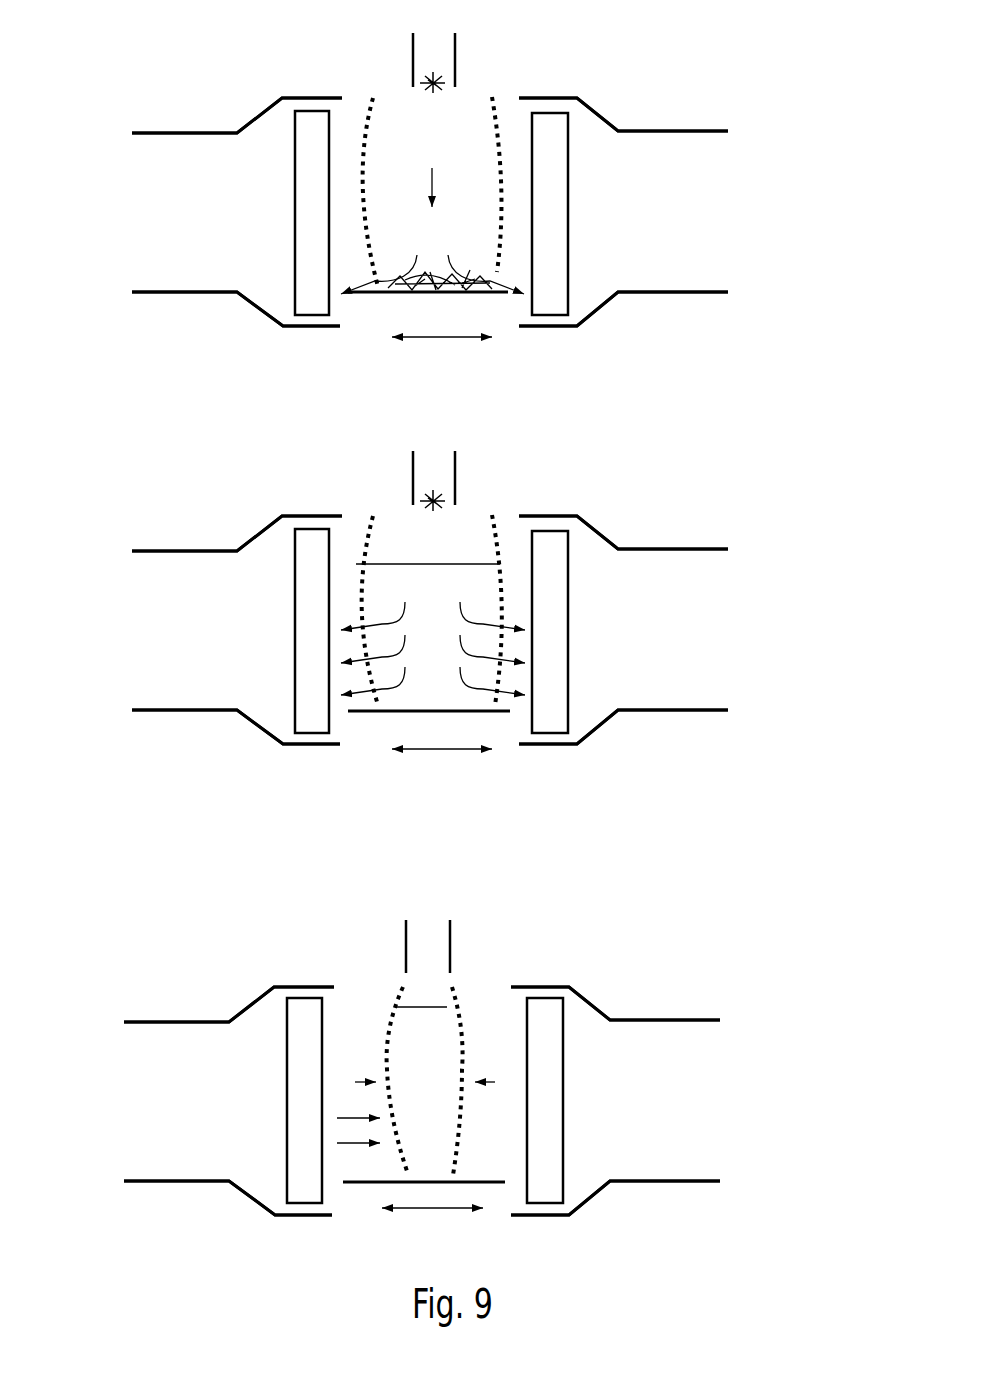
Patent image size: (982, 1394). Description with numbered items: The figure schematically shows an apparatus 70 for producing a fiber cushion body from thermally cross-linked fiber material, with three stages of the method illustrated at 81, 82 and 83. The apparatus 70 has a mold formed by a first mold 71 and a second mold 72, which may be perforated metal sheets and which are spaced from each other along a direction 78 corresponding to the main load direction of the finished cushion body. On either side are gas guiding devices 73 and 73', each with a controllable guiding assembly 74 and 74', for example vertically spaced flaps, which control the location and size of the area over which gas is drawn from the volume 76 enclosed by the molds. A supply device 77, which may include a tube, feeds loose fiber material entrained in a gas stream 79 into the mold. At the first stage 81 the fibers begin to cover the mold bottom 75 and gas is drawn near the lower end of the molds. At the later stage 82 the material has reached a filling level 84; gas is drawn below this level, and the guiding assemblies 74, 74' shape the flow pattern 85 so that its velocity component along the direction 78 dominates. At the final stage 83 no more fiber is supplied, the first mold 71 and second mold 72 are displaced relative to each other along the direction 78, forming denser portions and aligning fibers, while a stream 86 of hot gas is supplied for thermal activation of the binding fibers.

The apparatus 70 is at (274, 61).
The first mold 71 is at (371, 96).
The second mold 72 is at (494, 95).
The gas guiding device 73 is at (233, 643).
The gas guiding device 73' is at (619, 644).
The controllable guiding assembly 74 is at (284, 657).
The controllable guiding assembly 74' is at (572, 658).
The base plate 75 is at (406, 294).
The volume 76 is at (382, 235).
The supply device 77 is at (455, 57).
The direction 78 is at (463, 319).
The gas stream 79 is at (432, 190).
The first stage 81 is at (99, 84).
The later stage 82 is at (85, 479).
The final stage 83 is at (77, 949).
The filling level 84 is at (429, 781).
The flow pattern of gas stream 85 is at (433, 641).
The stream of hot gas 86 is at (411, 1144).